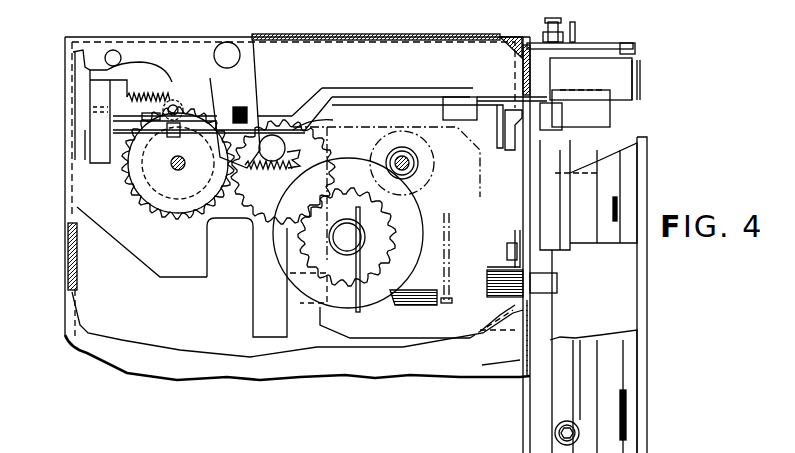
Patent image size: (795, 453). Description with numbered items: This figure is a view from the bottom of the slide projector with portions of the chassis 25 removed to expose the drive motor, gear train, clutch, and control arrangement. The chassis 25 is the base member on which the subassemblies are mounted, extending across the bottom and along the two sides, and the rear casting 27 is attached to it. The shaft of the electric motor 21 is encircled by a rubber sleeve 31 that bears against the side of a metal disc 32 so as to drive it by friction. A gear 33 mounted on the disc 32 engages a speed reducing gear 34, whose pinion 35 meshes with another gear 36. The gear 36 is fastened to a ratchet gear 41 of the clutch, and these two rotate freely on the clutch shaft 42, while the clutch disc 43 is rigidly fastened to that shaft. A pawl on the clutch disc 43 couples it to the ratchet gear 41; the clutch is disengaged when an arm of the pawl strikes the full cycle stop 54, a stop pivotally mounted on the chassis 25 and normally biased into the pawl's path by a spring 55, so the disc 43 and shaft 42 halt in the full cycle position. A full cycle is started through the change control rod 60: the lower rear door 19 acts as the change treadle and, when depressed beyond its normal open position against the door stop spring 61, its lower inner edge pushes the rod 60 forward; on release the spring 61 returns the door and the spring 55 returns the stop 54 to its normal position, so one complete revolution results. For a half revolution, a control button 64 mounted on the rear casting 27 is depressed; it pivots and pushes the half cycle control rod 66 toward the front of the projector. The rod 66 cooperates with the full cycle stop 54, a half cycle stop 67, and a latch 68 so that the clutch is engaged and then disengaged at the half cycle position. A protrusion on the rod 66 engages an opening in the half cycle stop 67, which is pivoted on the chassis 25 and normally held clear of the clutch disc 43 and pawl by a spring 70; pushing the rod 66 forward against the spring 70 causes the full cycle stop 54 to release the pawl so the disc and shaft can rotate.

The lower rear door 19 is at (647, 157).
The electric motor 21 is at (437, 292).
The chassis 25 is at (143, 48).
The rear casting 27 is at (633, 46).
The rubber sleeve 31 is at (410, 163).
The metal disc 32 is at (407, 207).
The gear 33 is at (305, 258).
The speed reducing gear 34 is at (253, 210).
The pinion 35 is at (335, 130).
The gear 36 is at (192, 228).
The ratchet gear 41 is at (152, 205).
The clutch shaft 42 is at (176, 168).
The clutch disc 43 is at (140, 180).
The full cycle stop 54 is at (97, 150).
The spring 55 is at (138, 100).
The change control rod 60 is at (373, 95).
The door stop spring 61 is at (497, 270).
The control button 64 is at (600, 113).
The half cycle control rod 66 is at (458, 90).
The half cycle stop 67 is at (252, 70).
The latch 68 is at (178, 95).
The spring 70 is at (256, 165).